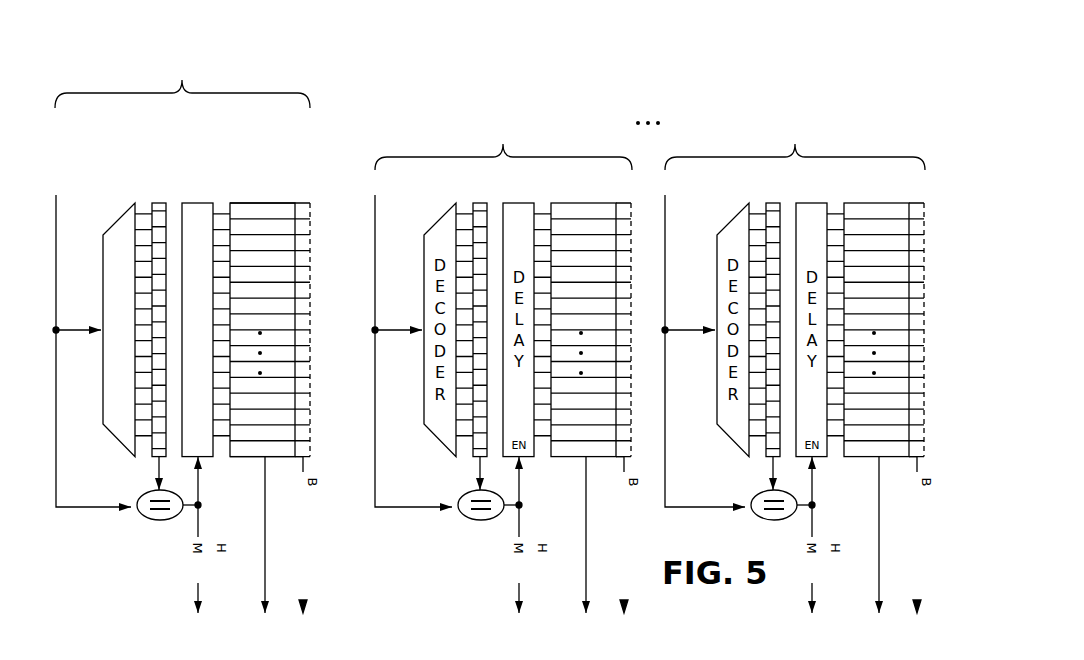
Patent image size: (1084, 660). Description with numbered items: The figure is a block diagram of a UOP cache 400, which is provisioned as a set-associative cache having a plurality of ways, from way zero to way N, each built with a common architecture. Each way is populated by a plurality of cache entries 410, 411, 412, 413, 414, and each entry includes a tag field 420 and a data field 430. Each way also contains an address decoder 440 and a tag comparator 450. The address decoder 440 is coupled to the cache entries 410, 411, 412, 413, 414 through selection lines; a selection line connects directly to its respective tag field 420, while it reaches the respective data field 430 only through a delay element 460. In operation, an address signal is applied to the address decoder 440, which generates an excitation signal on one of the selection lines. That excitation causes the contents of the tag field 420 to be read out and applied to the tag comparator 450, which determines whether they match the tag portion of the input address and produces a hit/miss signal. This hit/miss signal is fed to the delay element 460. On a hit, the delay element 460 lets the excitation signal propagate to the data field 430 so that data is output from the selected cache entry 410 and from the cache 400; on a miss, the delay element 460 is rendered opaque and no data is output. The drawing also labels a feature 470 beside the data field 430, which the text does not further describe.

The UOP cache 400 is at (700, 612).
The cache entry 410 is at (270, 211).
The cache entry 411 is at (270, 227).
The cache entry 412 is at (270, 243).
The cache entry 413 is at (270, 259).
The cache entry 414 is at (270, 449).
The tag field 420 is at (167, 191).
The data field 430 is at (231, 191).
The address decoder 440 is at (103, 247).
The tag comparator 450 is at (163, 521).
The delay element 460 is at (198, 203).
The bypass/bank select line 470 is at (297, 202).